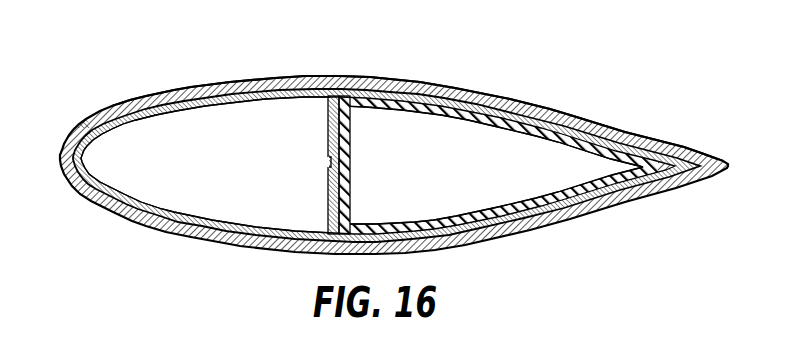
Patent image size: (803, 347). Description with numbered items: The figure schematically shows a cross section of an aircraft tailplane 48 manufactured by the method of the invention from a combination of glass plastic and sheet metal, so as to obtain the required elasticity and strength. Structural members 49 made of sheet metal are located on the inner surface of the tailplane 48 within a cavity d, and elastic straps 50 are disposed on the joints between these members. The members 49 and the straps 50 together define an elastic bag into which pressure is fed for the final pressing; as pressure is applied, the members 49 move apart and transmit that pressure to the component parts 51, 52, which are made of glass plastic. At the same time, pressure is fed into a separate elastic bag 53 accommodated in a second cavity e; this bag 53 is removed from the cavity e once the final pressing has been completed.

The tailplane 48 is at (109, 101).
The structural members 49 is at (164, 93).
The elastic straps 50 is at (82, 131).
The component part 51 is at (246, 78).
The component part 52 is at (371, 78).
The elastic bag 53 is at (486, 107).
The cavity d is at (286, 108).
The cavity e is at (556, 138).